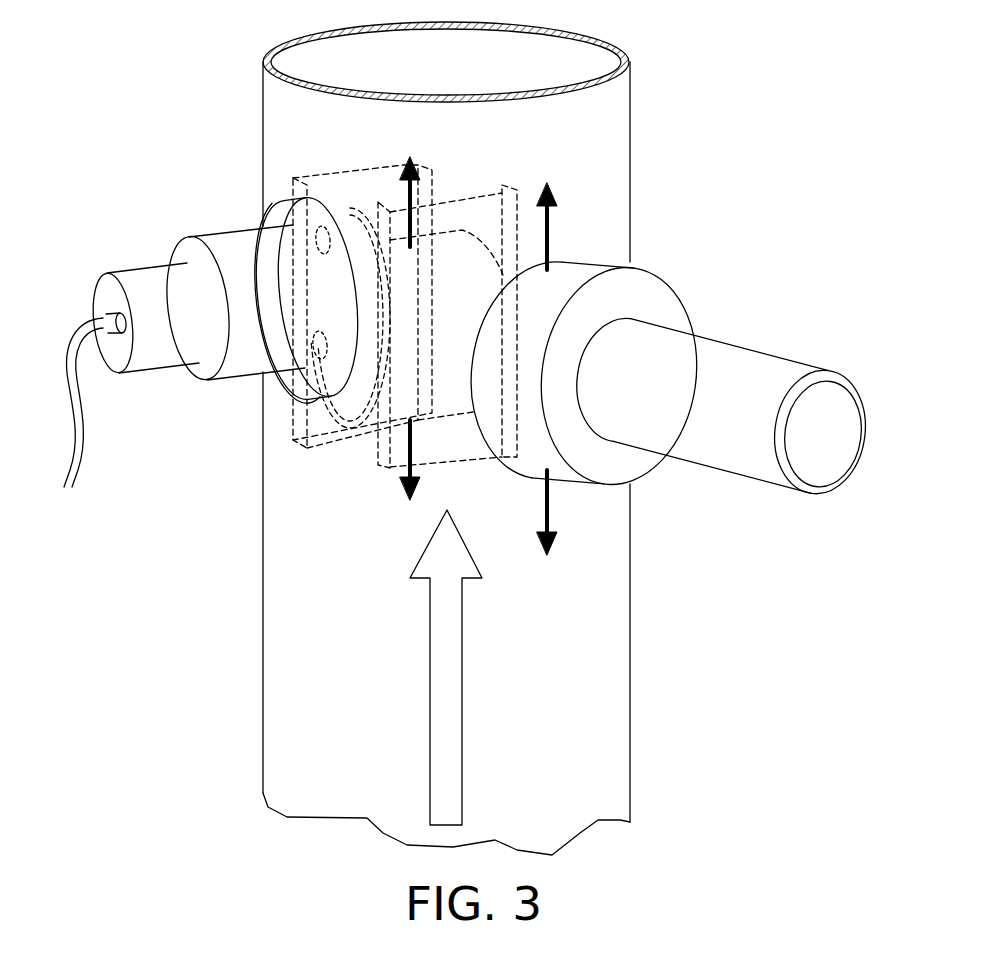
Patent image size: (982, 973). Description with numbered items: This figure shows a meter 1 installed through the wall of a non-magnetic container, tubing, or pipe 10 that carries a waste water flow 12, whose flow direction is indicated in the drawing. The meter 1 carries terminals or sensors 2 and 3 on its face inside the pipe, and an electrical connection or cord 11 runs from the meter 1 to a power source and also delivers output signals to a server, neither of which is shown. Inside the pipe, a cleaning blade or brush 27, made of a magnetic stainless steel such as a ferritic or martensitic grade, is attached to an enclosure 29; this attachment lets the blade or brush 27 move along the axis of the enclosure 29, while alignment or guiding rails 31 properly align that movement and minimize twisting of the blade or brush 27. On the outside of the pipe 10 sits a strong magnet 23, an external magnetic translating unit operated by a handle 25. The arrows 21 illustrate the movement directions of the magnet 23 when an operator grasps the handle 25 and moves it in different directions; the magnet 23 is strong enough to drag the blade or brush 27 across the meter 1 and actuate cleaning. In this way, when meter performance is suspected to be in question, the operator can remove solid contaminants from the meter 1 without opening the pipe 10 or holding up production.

The meter 1 is at (242, 372).
The sensor 2 is at (328, 232).
The sensor 3 is at (307, 347).
The pipe 10 is at (632, 595).
The electrical connection or cord 11 is at (87, 430).
The waste water flow 12 is at (463, 710).
The arrows 21 is at (548, 228).
The magnet 23 is at (660, 270).
The handle 25 is at (763, 347).
The cleaning blade or brush 27 is at (352, 433).
The enclosure 29 is at (462, 230).
The alignment or guiding rails 31 is at (343, 172).